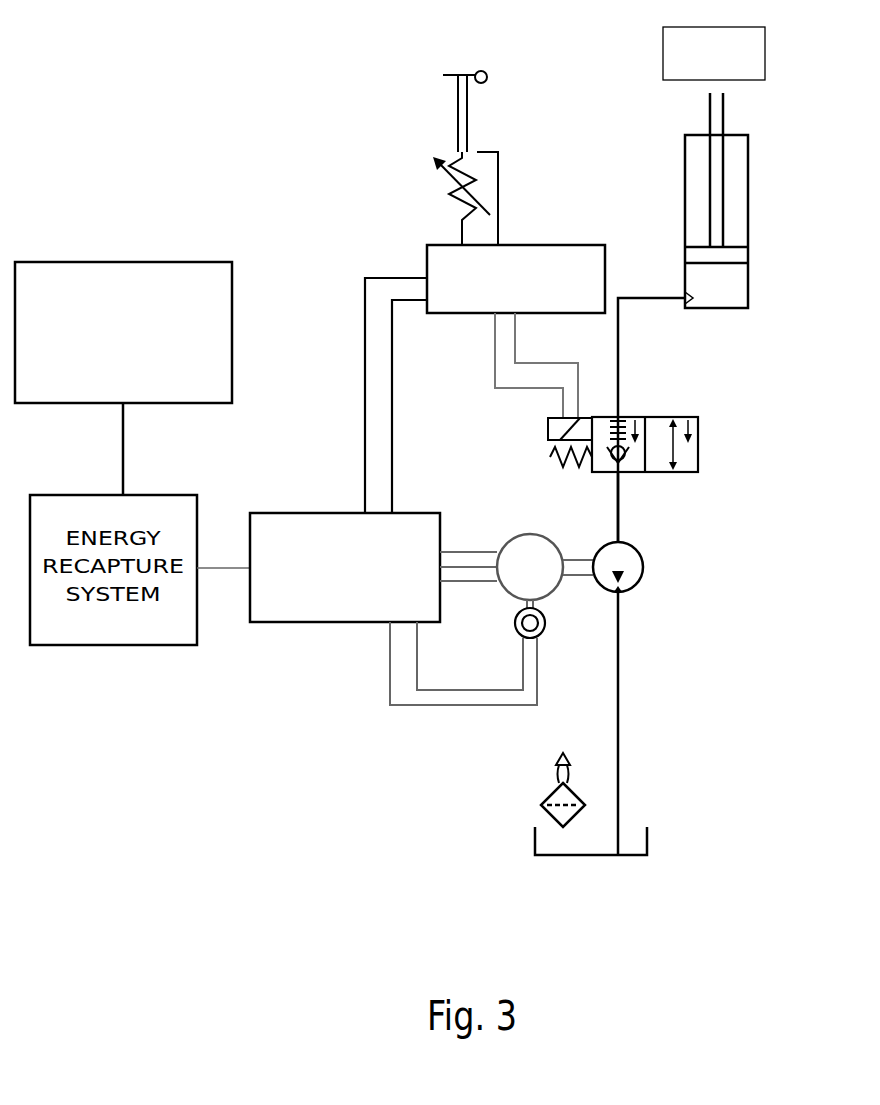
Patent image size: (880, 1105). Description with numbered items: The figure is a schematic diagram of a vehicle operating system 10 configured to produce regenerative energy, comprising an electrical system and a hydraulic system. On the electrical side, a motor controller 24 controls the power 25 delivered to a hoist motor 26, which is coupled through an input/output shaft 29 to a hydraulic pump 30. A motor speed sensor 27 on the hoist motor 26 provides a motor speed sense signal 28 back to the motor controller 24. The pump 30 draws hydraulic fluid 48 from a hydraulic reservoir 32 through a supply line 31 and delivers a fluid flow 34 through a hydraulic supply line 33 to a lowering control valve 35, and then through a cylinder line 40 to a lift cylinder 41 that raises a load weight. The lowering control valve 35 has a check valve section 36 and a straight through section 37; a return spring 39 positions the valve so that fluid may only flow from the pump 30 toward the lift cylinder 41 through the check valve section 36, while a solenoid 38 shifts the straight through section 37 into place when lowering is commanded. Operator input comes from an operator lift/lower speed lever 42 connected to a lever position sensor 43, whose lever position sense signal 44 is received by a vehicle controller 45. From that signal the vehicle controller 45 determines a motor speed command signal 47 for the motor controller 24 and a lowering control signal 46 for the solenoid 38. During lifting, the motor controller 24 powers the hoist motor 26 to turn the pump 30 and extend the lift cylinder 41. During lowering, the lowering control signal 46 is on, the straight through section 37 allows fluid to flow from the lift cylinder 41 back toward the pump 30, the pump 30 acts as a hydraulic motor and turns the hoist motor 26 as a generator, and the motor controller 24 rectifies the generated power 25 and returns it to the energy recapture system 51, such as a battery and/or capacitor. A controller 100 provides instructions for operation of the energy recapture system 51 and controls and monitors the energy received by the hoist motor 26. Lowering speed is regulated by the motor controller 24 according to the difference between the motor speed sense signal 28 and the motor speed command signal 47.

The vehicle operating system 10 is at (182, 181).
The motor controller 24 is at (347, 622).
The power 25 is at (478, 549).
The hoist motor 26 is at (530, 534).
The motor speed sensor 27 is at (548, 637).
The motor speed sense signal 28 is at (469, 708).
The input/output shaft 29 is at (585, 556).
The hydraulic pump 30 is at (645, 571).
The supply line 31 is at (625, 696).
The hydraulic reservoir 32 is at (657, 841).
The hydraulic supply line 33 is at (625, 521).
The fluid flow 34 is at (625, 498).
The lowering control valve 35 is at (677, 423).
The check valve section 36 is at (637, 417).
The straight through section 37 is at (690, 417).
The solenoid 38 is at (548, 429).
The return spring 39 is at (548, 461).
The cylinder line 40 is at (623, 334).
The lift cylinder 41 is at (753, 205).
The operator lift/lower speed lever 42 is at (453, 108).
The lever position sensor 43 is at (445, 193).
The lever position sense signal 44 is at (508, 192).
The vehicle controller 45 is at (466, 315).
The lowering control signal 46 is at (495, 386).
The motor speed command signal 47 is at (355, 395).
The hydraulic fluid 48 is at (632, 828).
The energy recapture system 51 is at (97, 458).
The controller 100 is at (106, 371).